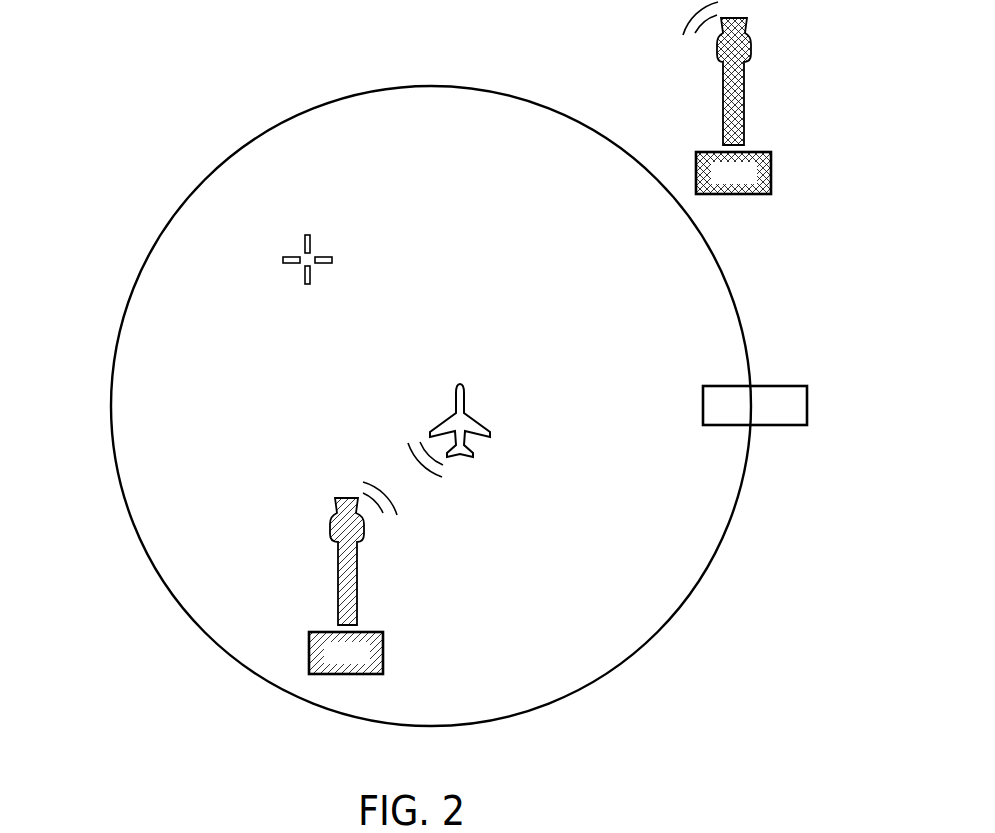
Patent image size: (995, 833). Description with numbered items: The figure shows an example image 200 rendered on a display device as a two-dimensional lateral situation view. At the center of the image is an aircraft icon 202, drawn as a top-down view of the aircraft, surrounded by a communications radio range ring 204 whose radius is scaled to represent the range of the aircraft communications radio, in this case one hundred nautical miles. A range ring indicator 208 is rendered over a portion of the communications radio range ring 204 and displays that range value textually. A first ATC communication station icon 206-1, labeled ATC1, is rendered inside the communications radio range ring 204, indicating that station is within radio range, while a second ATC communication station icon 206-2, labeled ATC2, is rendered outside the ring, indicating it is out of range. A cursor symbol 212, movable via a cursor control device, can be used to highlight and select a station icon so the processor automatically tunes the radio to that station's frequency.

The image 200 is at (105, 120).
The aircraft icon 202 is at (465, 400).
The communications radio range ring 204 is at (727, 277).
The first ATC communication station icon 206-1 is at (330, 523).
The second ATC communication station icon 206-2 is at (743, 108).
The range ring indicator 208 is at (808, 407).
The cursor symbol 212 is at (283, 260).